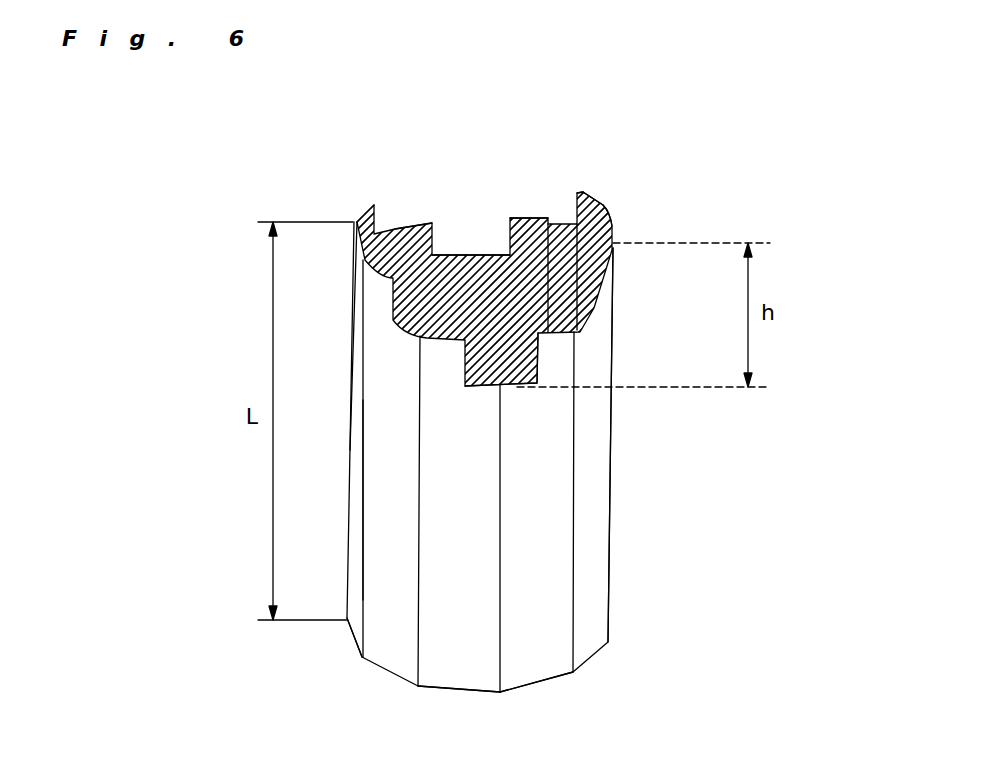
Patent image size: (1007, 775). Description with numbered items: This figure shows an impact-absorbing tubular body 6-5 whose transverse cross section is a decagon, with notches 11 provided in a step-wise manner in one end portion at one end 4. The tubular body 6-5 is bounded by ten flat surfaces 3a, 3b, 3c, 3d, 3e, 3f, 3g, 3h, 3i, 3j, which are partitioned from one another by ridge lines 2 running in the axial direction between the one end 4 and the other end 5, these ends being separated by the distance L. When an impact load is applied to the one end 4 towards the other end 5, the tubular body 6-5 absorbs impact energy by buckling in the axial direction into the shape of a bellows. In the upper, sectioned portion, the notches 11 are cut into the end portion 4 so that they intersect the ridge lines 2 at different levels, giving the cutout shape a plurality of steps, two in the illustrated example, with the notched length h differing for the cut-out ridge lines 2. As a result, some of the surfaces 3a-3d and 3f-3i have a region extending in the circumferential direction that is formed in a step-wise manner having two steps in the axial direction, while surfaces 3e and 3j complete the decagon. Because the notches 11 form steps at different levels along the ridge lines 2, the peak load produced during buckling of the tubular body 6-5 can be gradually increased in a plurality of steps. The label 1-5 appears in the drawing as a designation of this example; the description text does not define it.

The cutting tool (fifth embodiment) 1-5 is at (603, 143).
The ridge lines 2 is at (408, 227).
The flat surface 3a is at (385, 543).
The flat surface 3b is at (465, 667).
The flat surface 3c is at (527, 657).
The flat surface 3d is at (604, 595).
The flat surface 3e is at (610, 231).
The flat surface 3f is at (598, 203).
The flat surface 3g is at (519, 218).
The flat surface 3h is at (441, 228).
The flat surface 3i is at (361, 220).
The flat surface 3j is at (358, 408).
The one end 4 is at (581, 191).
The other end 5 is at (392, 675).
The tubular body 6-5 is at (613, 513).
The notches 11 is at (497, 255).